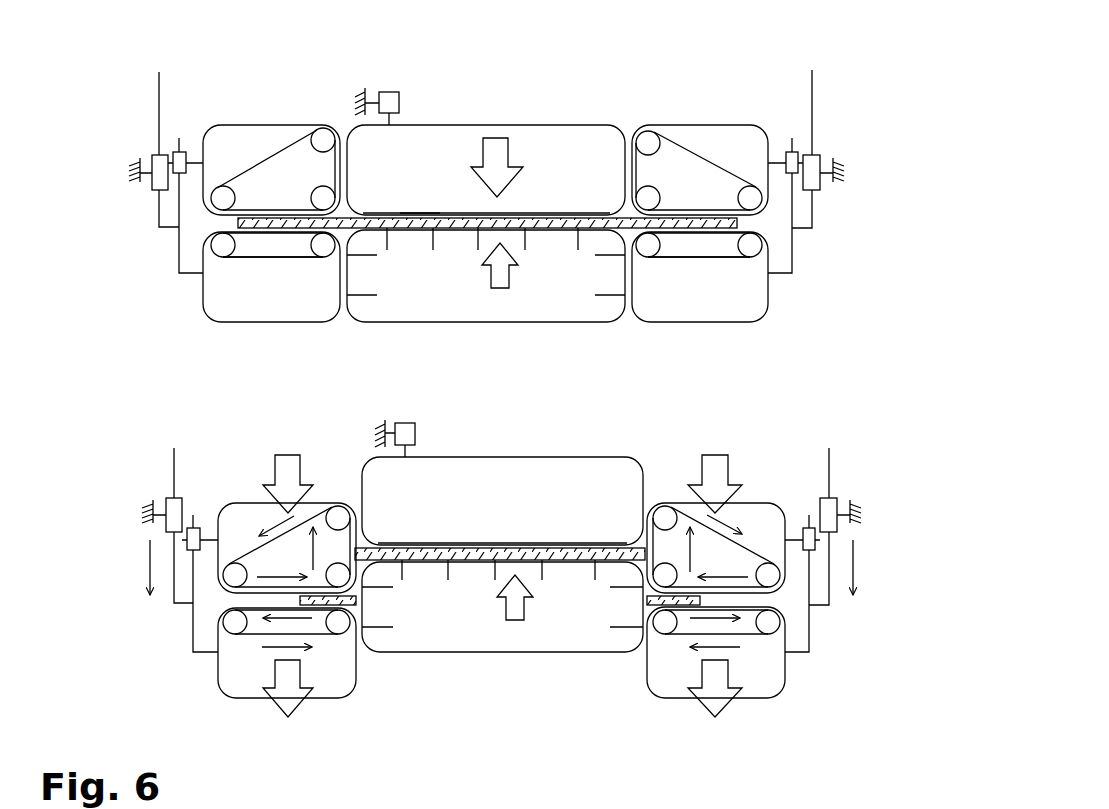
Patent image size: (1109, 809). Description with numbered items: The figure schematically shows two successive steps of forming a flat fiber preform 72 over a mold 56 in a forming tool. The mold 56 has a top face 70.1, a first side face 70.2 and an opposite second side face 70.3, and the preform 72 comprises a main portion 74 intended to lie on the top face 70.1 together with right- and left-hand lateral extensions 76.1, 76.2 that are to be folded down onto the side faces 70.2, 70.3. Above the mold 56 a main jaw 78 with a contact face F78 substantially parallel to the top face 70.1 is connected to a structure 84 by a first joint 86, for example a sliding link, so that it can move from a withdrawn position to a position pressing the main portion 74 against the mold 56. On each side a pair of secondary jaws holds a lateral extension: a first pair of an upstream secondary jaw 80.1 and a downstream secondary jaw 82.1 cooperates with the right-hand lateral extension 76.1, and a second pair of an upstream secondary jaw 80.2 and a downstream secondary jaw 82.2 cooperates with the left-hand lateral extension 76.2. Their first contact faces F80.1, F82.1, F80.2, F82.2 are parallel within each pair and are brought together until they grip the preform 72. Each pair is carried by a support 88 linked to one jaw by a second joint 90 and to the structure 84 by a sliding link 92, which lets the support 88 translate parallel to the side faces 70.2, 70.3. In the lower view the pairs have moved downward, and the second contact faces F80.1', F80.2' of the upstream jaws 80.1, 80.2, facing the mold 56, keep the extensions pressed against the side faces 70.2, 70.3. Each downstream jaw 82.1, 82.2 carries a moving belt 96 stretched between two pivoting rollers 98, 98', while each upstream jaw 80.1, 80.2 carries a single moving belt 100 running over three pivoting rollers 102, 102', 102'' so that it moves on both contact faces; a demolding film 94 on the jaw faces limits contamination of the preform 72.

The mold 56 is at (525, 306).
The top face 70.1 is at (455, 225).
The first side face 70.2 is at (352, 287).
The second side face 70.3 is at (617, 278).
The flat fiber preform 72 is at (550, 212).
The main portion 74 is at (452, 215).
The right-hand lateral extension 76.1 is at (268, 210).
The left-hand lateral extension 76.2 is at (705, 212).
The main jaw 78 is at (418, 132).
The upstream secondary jaw 80.1 is at (262, 146).
The upstream secondary jaw 80.2 is at (717, 127).
The downstream secondary jaw 82.1 is at (230, 299).
The downstream secondary jaw 82.2 is at (748, 300).
The structure 84 is at (122, 155).
The first joint 86 is at (388, 82).
The support 88 is at (128, 173).
The second joint 90 is at (163, 147).
The sliding link 92 is at (150, 148).
The demolding film 94 is at (412, 213).
The moving belt 96 is at (268, 258).
The pivoting roller 98 is at (397, 430).
The pivoting roller 98' is at (584, 466).
The moving belt 100 is at (283, 185).
The pivoting roller 102 is at (422, 329).
The pivoting roller 102' is at (537, 331).
The pivoting roller 102'' is at (490, 290).
The contact face F78 is at (537, 222).
The first contact face F80.1 is at (149, 399).
The first contact face F80.2 is at (508, 446).
The second contact face F80.1' is at (303, 271).
The second contact face F80.2' is at (675, 283).
The first contact face F82.1 is at (235, 255).
The first contact face F82.2 is at (748, 252).